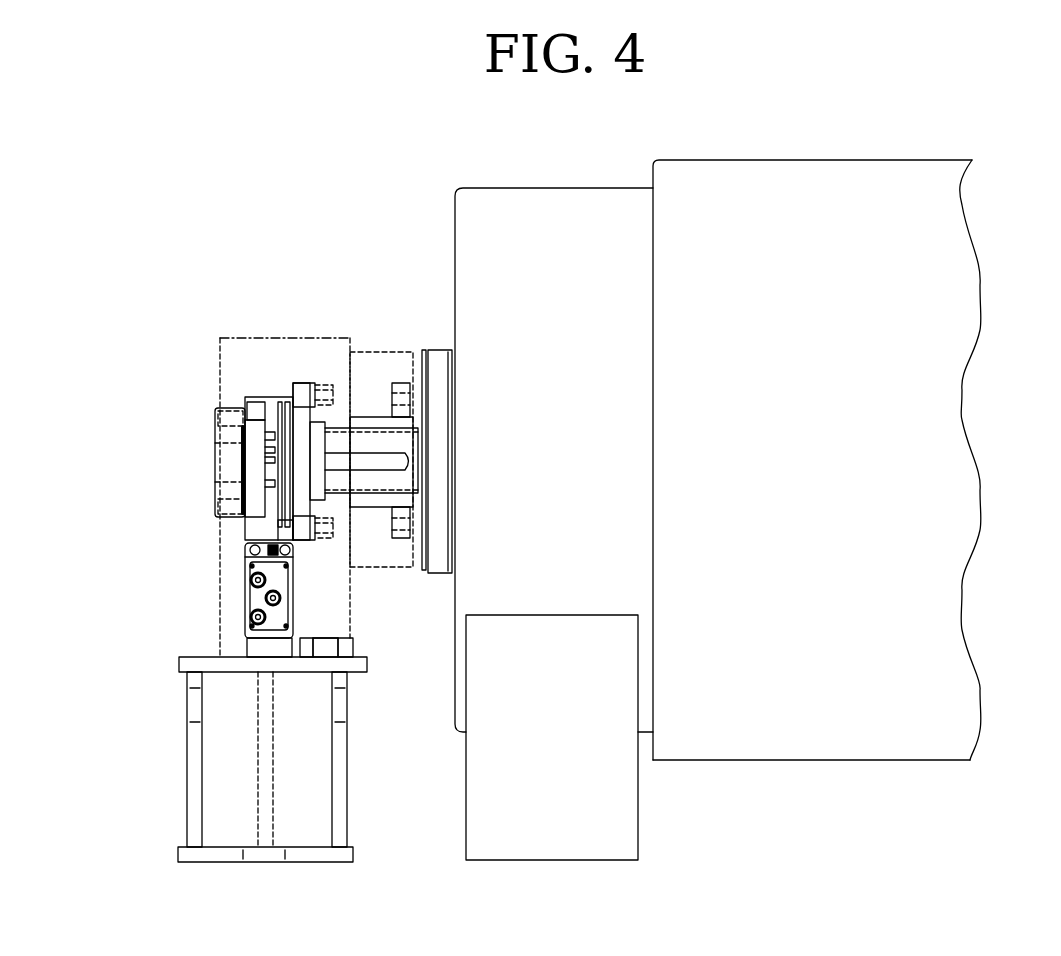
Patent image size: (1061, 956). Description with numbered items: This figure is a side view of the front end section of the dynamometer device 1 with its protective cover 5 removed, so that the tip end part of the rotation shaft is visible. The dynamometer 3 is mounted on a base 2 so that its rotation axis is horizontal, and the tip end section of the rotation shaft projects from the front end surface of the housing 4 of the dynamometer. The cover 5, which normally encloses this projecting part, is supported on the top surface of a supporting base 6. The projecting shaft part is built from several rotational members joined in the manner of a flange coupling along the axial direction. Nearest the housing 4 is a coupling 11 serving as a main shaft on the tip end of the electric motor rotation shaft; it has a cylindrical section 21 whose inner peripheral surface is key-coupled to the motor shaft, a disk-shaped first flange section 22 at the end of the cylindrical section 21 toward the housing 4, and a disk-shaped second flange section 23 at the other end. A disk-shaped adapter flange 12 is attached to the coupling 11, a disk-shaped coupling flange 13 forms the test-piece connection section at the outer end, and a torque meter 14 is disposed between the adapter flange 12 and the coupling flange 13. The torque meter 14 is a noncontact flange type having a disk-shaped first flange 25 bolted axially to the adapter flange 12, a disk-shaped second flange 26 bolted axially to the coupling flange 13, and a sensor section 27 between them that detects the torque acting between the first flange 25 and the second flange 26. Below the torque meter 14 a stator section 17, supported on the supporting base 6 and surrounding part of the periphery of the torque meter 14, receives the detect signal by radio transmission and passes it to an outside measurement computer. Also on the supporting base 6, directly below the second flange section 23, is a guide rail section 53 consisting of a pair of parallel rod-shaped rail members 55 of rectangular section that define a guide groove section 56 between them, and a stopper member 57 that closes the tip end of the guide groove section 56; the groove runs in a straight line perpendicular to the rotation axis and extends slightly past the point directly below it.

The dynamometer device 1 is at (440, 190).
The base 2 is at (612, 823).
The dynamometer 3 is at (633, 160).
The housing 4 is at (947, 277).
The cover 5 is at (218, 538).
The supporting base 6 is at (193, 747).
The coupling 11 is at (447, 270).
The adapter flange 12 is at (300, 383).
The coupling flange 13 is at (230, 408).
The torque meter 14 is at (302, 270).
The stator section 17 is at (243, 593).
The cylindrical section 21 is at (378, 417).
The first flange section 22 is at (402, 385).
The second flange section 23 is at (318, 425).
The first flange 25 is at (290, 420).
The second flange 26 is at (243, 400).
The sensor section 27 is at (262, 415).
The guide rail section 53 is at (362, 656).
The rail members 55 is at (308, 652).
The guide groove section 56 is at (325, 638).
The stopper member 57 is at (322, 637).